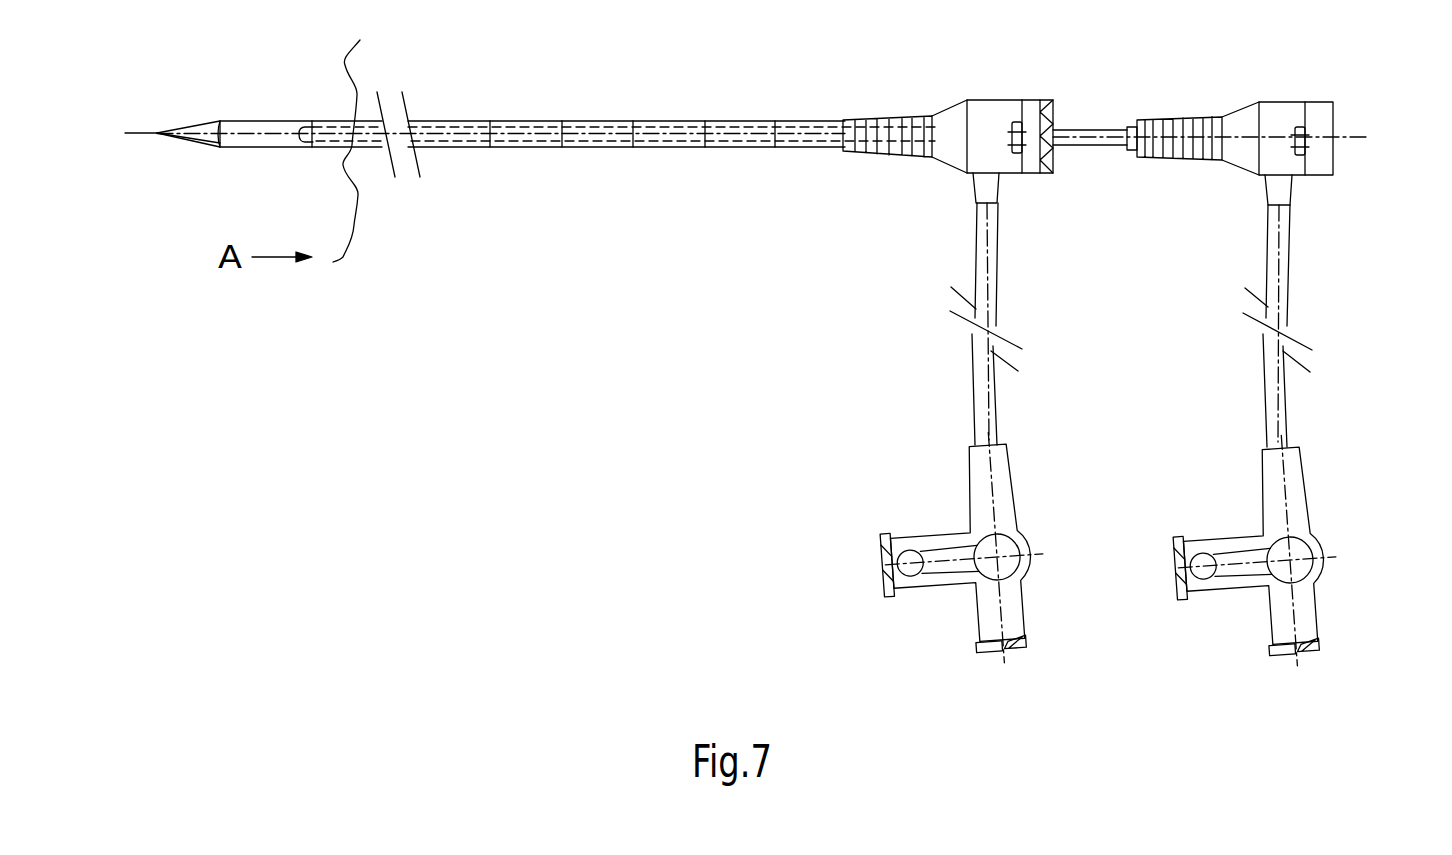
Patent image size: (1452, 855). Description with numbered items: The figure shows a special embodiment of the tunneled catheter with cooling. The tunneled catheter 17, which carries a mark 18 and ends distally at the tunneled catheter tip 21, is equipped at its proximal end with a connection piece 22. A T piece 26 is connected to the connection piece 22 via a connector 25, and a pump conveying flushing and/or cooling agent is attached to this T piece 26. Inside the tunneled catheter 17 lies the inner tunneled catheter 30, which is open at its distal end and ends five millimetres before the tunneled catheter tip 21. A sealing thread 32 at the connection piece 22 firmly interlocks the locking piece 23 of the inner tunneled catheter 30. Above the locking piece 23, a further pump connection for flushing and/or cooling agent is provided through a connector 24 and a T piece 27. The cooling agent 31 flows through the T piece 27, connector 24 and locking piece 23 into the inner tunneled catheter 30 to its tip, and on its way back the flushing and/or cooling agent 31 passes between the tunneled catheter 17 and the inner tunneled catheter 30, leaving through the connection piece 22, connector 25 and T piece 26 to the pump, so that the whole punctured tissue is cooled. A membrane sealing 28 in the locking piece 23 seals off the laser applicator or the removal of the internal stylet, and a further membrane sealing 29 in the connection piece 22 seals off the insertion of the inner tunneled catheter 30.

The tunneled catheter 17 is at (584, 150).
The mark 18 is at (705, 131).
The tunneled catheter tip 21 is at (194, 147).
The connection piece 22 is at (1013, 98).
The locking piece 23 is at (1283, 113).
The connection 24 is at (1284, 278).
The connection 25 is at (990, 425).
The T piece 26 is at (987, 607).
The T piece 27 is at (1298, 530).
The membrane sealing 28 is at (1305, 132).
The membrane sealing 29 is at (1020, 150).
The inner tunneled catheter 30 is at (447, 124).
The flushing and/or cooling fluid 31 is at (300, 147).
The sealing thread 32 is at (1054, 111).